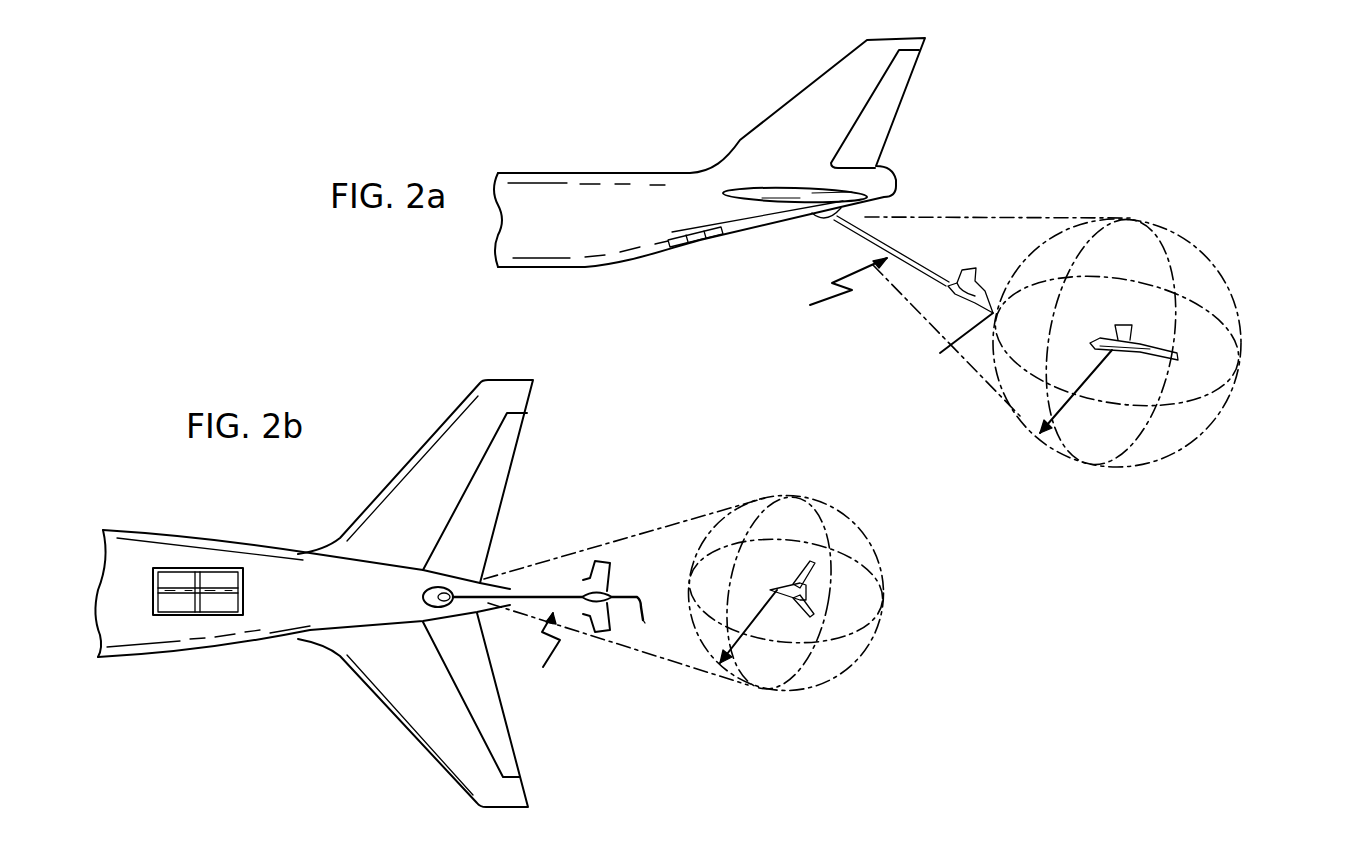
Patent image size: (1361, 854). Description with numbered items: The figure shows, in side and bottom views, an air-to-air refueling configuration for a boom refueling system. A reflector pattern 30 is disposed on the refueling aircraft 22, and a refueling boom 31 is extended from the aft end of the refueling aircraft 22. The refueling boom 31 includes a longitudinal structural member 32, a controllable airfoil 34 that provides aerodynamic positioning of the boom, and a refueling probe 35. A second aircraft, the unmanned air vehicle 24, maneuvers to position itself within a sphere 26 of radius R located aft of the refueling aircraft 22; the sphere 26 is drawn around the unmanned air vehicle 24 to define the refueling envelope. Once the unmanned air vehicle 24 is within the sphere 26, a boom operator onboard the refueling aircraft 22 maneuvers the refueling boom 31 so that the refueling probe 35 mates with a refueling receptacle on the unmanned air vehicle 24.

In FIG. 2A, the refueling aircraft 22 is at (582, 190).
In FIG. 2B, the refueling aircraft 22 is at (411, 476).
In FIG. 2A, the unmanned air vehicle 24 is at (1177, 352).
In FIG. 2B, the unmanned air vehicle 24 is at (812, 560).
In FIG. 2A, the sphere 26 is at (1108, 469).
In FIG. 2B, the sphere 26 is at (763, 691).
In FIG. 2A, the reflector pattern 30 is at (675, 244).
In FIG. 2B, the reflector pattern 30 is at (237, 615).
In FIG. 2A, the refueling boom 31 is at (827, 298).
In FIG. 2B, the refueling boom 31 is at (548, 657).
In FIG. 2A, the longitudinal structural member 32 is at (912, 258).
In FIG. 2B, the longitudinal structural member 32 is at (548, 596).
In FIG. 2A, the controllable airfoil 34 is at (990, 272).
In FIG. 2B, the controllable airfoil 34 is at (604, 560).
In FIG. 2A, the refueling probe 35 is at (950, 356).
In FIG. 2B, the refueling probe 35 is at (666, 627).